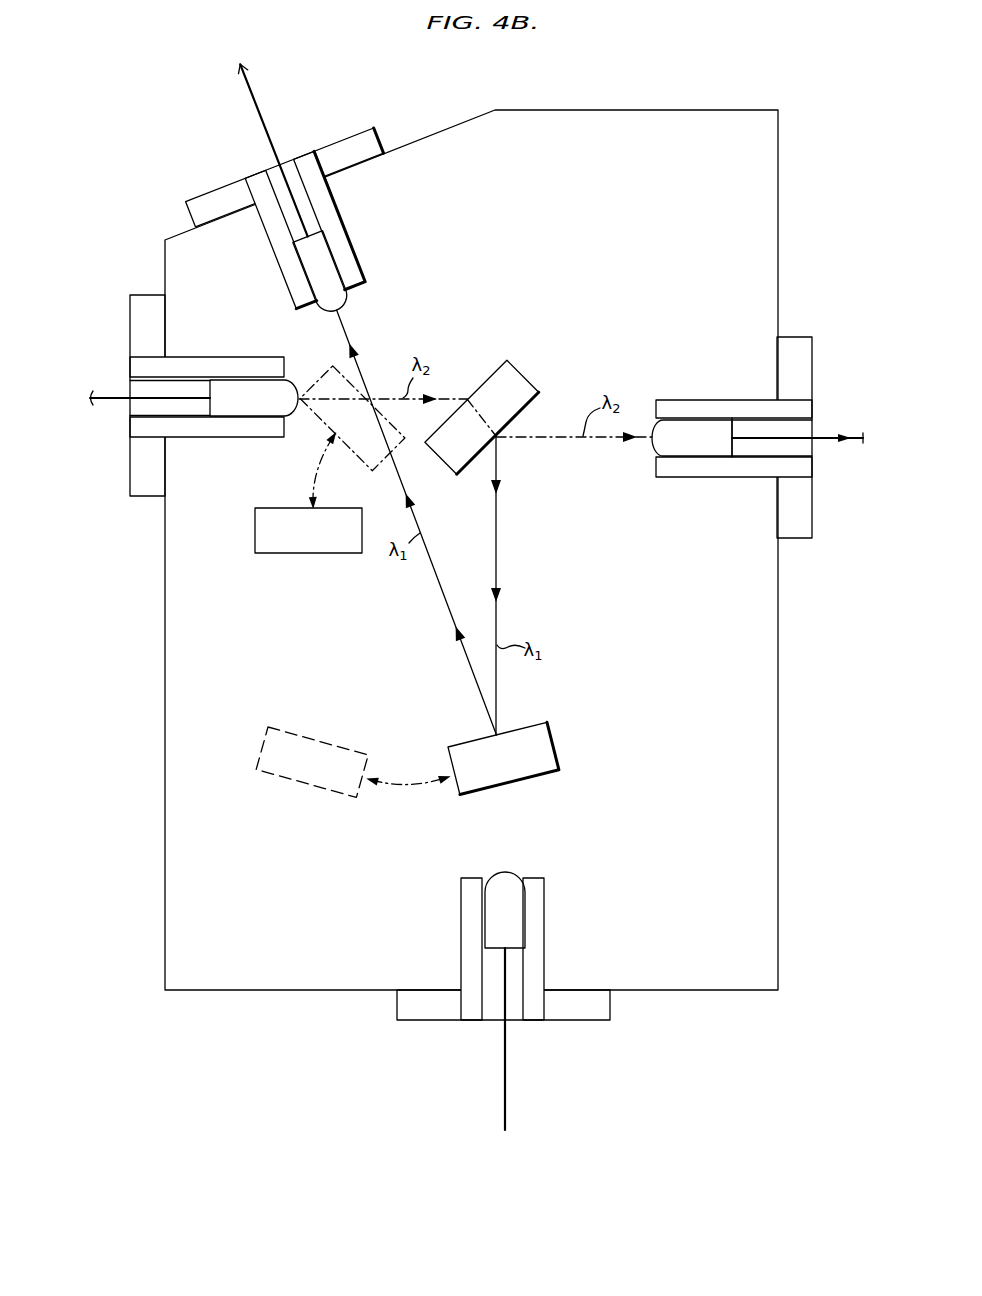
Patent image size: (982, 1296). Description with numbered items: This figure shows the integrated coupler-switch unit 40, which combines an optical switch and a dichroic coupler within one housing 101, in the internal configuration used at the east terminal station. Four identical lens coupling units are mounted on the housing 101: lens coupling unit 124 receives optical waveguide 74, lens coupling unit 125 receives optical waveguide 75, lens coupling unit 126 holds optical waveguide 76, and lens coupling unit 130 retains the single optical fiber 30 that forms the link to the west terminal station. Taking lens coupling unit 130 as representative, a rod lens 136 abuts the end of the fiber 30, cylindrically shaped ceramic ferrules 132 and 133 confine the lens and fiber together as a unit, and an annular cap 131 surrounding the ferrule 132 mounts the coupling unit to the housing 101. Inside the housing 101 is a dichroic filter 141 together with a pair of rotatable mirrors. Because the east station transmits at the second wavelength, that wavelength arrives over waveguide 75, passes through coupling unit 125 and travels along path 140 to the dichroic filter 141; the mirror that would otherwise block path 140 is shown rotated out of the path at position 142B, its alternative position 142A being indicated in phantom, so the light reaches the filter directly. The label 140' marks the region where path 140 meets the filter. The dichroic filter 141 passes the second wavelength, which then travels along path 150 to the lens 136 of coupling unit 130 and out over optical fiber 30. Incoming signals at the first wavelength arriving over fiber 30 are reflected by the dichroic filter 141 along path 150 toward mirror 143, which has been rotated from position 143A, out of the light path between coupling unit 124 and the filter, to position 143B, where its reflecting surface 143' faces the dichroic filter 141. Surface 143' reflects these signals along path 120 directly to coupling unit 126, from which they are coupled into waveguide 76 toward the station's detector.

The coupler-switch unit 40 is at (471, 545).
The housing 101 is at (632, 109).
The annular cap 131 is at (794, 531).
The lens coupling unit 125 is at (181, 446).
The optical waveguide 75 is at (97, 397).
The lens coupling unit 130 is at (736, 442).
The ceramic ferrule 132 is at (714, 403).
The ceramic ferrule 133 is at (814, 425).
The rod lens 136 is at (653, 428).
The optical fiber 30 is at (822, 443).
The lens coupling unit 124 is at (552, 936).
The optical waveguide 74 is at (506, 1095).
The lens coupling unit 126 is at (356, 228).
The optical waveguide 76 is at (255, 103).
The path 120 is at (445, 597).
The path 150 is at (498, 548).
The path 140 is at (367, 418).
The filter first position 142A is at (400, 413).
The filter second position 142B is at (308, 491).
The dichroic filter 141 is at (504, 400).
The reflective coating 140' is at (520, 424).
The rotatable mirror 143 is at (510, 744).
The reflecting surface 143' is at (516, 735).
The mirror position 143B is at (510, 735).
The mirror position 143A is at (354, 762).